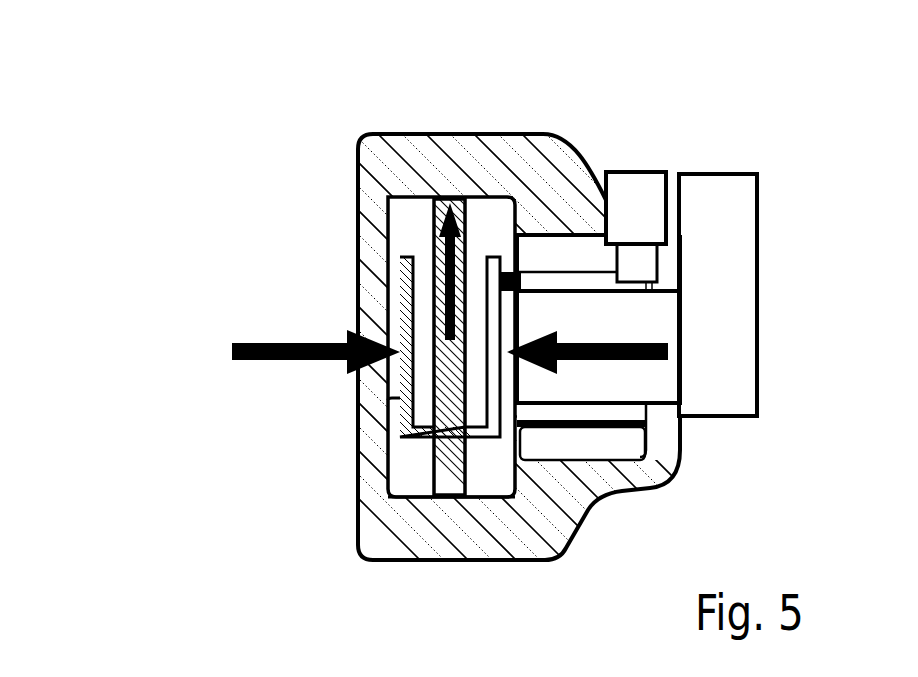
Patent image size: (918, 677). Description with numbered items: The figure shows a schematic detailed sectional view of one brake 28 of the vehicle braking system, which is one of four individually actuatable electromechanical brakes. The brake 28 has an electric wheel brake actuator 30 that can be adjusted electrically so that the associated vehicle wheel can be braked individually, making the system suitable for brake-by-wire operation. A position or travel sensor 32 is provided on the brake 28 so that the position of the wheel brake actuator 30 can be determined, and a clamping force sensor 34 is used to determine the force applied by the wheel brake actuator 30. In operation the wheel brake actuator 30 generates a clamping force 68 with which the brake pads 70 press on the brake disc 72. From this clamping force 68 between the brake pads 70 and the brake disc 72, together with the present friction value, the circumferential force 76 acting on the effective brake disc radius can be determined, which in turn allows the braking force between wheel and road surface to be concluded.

The brake 28 is at (196, 123).
The wheel brake actuator 30 is at (618, 377).
The travel sensor 32 is at (642, 200).
The clamping force sensor 34 is at (505, 293).
The clamping force 68 is at (320, 342).
The brake pad 70 is at (475, 273).
The brake disc 72 is at (443, 463).
The circumferential force 76 is at (437, 278).